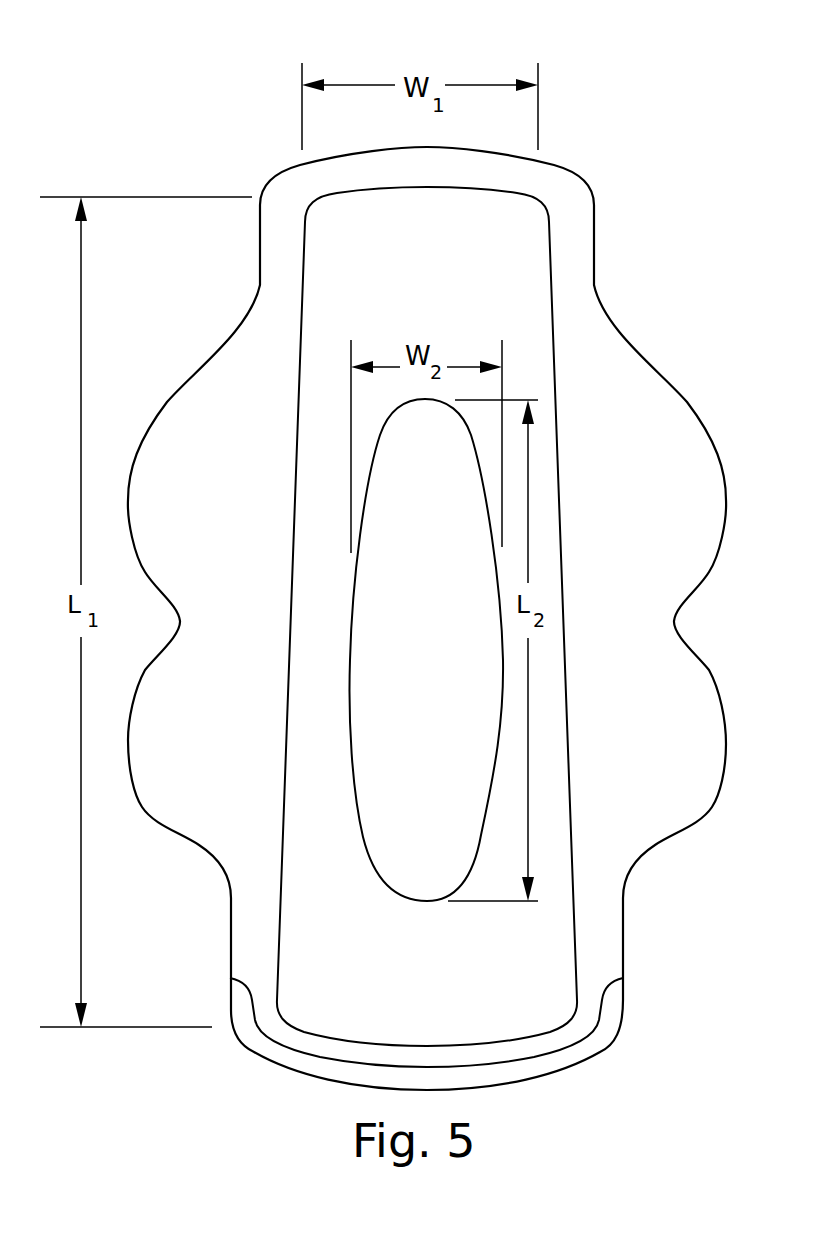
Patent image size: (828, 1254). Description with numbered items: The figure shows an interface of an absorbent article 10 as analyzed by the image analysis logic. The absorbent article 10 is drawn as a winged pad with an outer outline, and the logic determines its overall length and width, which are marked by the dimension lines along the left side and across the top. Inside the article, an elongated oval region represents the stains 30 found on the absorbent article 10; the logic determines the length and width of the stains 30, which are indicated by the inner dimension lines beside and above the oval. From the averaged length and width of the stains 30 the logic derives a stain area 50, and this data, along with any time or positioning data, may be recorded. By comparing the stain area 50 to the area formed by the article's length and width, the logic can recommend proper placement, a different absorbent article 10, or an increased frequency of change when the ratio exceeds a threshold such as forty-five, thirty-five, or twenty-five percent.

The absorbent article 10 is at (627, 150).
The stains 30 is at (428, 899).
The stain area 50 is at (350, 723).